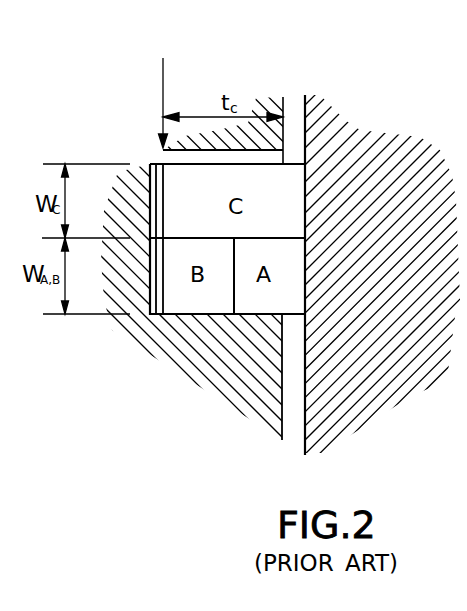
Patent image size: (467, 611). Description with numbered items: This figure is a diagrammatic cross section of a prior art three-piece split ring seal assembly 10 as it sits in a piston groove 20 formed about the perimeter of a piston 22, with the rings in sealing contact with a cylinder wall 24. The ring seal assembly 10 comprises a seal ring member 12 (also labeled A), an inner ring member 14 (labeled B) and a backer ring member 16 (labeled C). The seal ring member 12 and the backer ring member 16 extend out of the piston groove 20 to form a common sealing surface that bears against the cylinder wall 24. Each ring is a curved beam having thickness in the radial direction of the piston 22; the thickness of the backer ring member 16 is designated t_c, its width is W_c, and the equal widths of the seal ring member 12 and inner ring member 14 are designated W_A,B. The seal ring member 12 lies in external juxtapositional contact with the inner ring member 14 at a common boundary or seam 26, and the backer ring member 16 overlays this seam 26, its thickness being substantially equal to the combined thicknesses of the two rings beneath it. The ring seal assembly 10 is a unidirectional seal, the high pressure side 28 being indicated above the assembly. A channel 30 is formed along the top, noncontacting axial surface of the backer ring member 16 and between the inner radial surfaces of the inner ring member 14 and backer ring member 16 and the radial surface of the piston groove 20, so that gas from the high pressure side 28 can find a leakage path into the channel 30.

The ring seal assembly 10 is at (250, 80).
The seal ring member 12 is at (290, 300).
The inner ring member 14 is at (202, 300).
The backer ring member 16 is at (285, 185).
The piston groove 20 is at (148, 158).
The piston 22 is at (232, 360).
The cylinder wall 24 is at (397, 275).
The seam 26 is at (235, 292).
The high pressure side 28 is at (293, 88).
The channel 30 is at (150, 153).